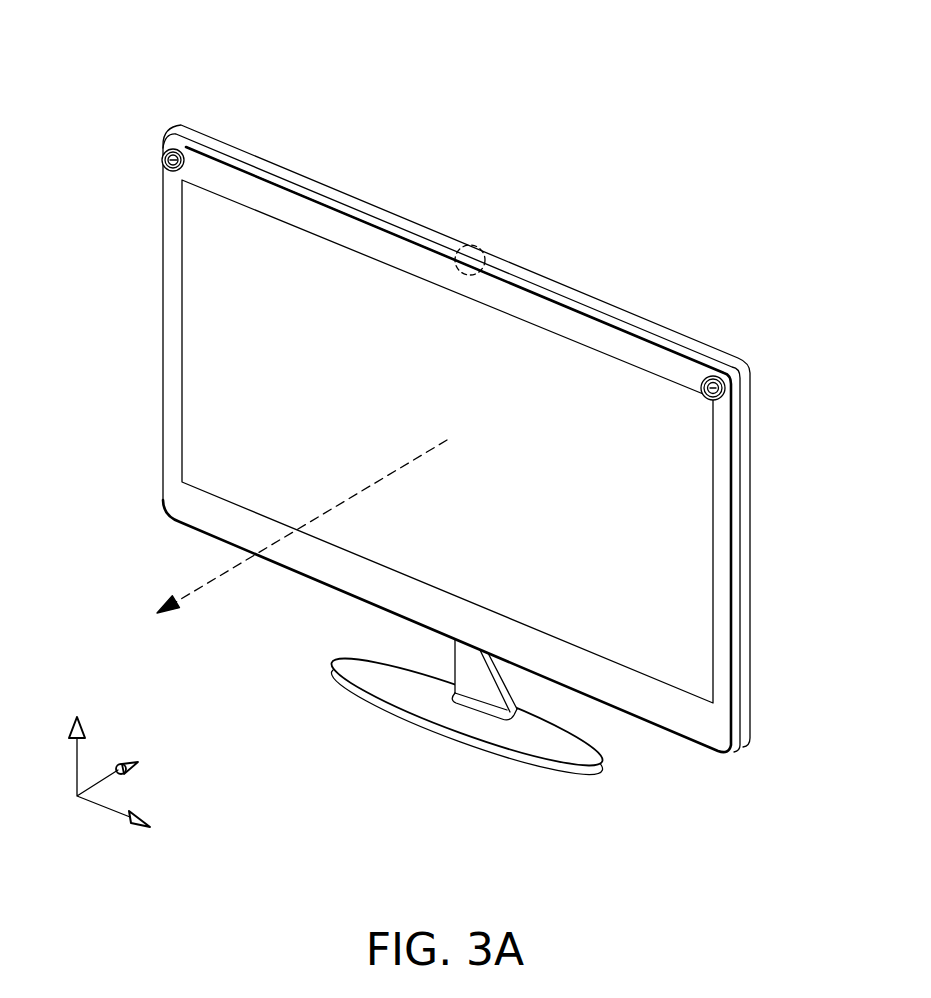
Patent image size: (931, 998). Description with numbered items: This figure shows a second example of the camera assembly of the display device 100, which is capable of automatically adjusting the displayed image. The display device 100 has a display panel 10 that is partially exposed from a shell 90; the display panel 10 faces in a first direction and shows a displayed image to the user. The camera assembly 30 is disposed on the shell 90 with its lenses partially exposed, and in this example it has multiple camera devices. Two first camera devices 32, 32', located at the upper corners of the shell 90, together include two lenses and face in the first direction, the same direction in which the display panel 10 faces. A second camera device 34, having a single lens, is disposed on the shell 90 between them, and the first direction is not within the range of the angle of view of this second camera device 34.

The display device 100 is at (720, 54).
The display panel 10 is at (243, 328).
The shell 90 is at (172, 278).
The camera assembly 30 is at (445, 246).
The first camera device 32 is at (288, 156).
The first camera device 32' is at (678, 321).
The second camera device 34 is at (487, 248).